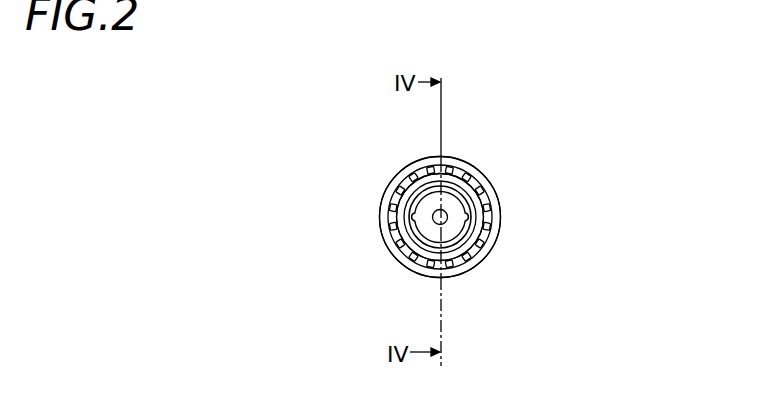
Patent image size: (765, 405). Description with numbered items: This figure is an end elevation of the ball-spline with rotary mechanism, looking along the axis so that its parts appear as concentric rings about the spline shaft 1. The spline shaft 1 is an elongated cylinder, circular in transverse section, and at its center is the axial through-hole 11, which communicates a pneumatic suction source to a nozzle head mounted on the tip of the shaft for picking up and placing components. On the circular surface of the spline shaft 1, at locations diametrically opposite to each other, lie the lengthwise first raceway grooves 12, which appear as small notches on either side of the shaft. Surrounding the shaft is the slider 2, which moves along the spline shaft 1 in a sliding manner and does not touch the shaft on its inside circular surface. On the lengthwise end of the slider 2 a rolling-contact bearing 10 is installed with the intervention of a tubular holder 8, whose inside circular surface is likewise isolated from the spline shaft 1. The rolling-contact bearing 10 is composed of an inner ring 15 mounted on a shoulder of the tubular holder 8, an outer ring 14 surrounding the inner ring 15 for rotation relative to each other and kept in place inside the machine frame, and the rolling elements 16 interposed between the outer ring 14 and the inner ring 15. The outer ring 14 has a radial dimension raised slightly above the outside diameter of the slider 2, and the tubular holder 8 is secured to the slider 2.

The spline shaft 1 is at (438, 226).
The slider 2 is at (478, 163).
The tubular holder 8 is at (475, 210).
The rolling-contact bearing 10 is at (500, 222).
The axial through-hole 11 is at (441, 210).
The first raceway grooves 12 is at (487, 235).
The outer ring 14 is at (390, 190).
The inner ring 15 is at (407, 255).
The rolling elements 16 is at (483, 232).